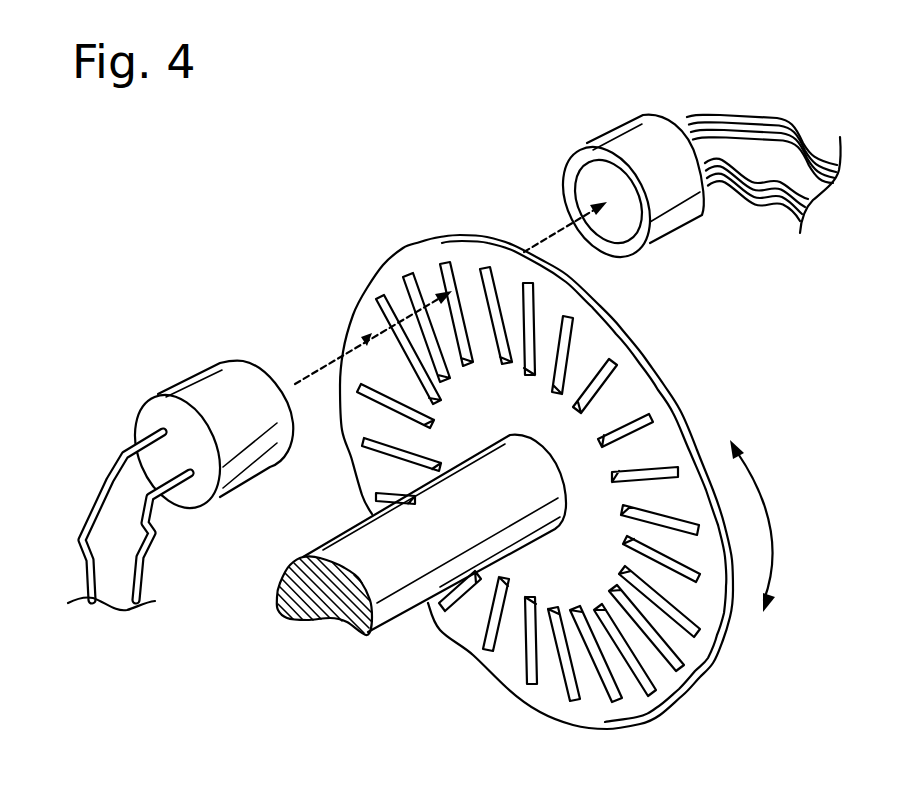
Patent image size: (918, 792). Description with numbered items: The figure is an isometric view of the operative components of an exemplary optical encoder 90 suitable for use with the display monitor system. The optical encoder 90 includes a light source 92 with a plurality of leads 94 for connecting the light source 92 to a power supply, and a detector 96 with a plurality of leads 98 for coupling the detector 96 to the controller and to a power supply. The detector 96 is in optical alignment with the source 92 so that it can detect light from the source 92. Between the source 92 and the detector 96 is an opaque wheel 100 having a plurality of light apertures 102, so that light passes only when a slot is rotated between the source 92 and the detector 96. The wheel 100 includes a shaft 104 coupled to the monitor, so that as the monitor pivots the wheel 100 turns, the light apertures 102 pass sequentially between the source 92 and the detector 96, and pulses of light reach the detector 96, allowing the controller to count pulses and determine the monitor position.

The optical encoder 90 is at (437, 115).
The light source 92 is at (203, 387).
The leads 94 is at (88, 520).
The detector 96 is at (670, 222).
The leads 98 is at (803, 91).
The wheel 100 is at (686, 706).
The light apertures 102 is at (642, 412).
The shaft 104 is at (385, 605).